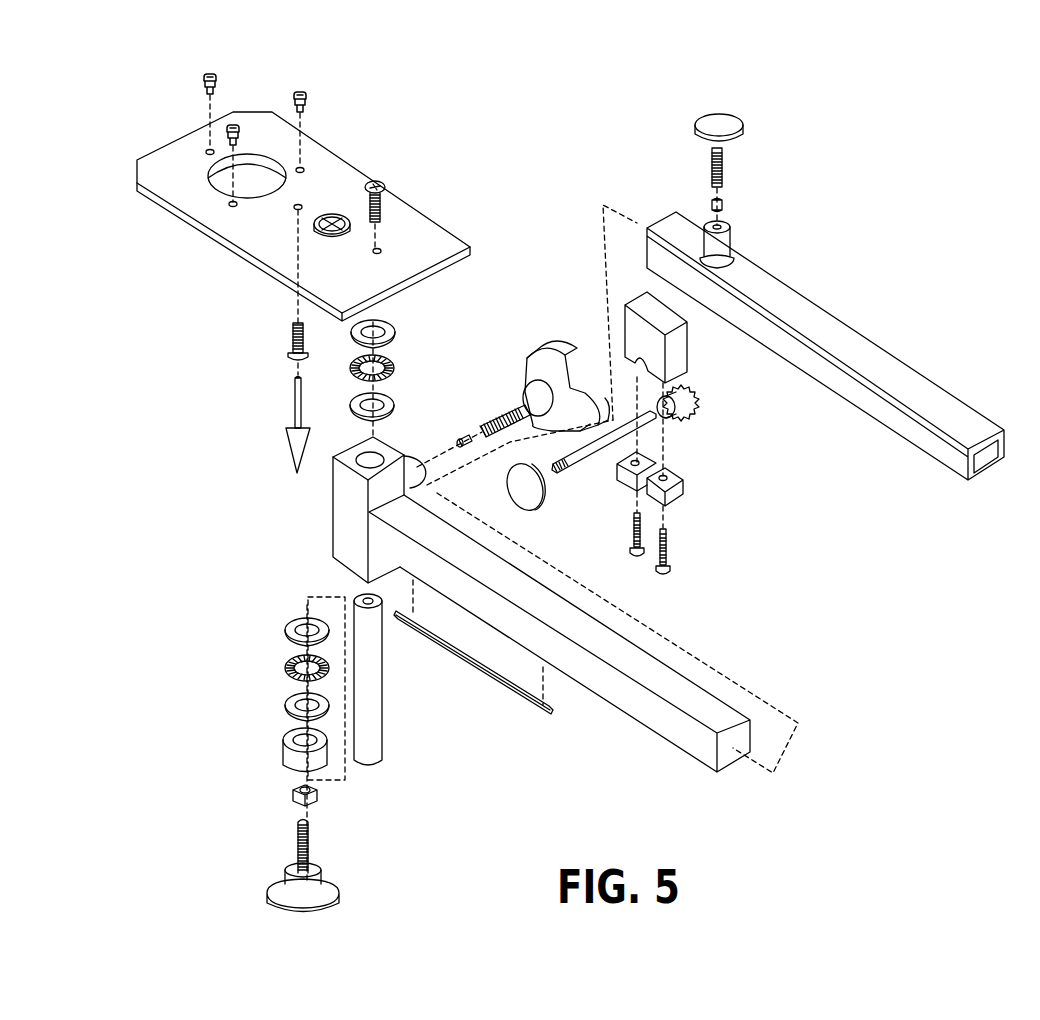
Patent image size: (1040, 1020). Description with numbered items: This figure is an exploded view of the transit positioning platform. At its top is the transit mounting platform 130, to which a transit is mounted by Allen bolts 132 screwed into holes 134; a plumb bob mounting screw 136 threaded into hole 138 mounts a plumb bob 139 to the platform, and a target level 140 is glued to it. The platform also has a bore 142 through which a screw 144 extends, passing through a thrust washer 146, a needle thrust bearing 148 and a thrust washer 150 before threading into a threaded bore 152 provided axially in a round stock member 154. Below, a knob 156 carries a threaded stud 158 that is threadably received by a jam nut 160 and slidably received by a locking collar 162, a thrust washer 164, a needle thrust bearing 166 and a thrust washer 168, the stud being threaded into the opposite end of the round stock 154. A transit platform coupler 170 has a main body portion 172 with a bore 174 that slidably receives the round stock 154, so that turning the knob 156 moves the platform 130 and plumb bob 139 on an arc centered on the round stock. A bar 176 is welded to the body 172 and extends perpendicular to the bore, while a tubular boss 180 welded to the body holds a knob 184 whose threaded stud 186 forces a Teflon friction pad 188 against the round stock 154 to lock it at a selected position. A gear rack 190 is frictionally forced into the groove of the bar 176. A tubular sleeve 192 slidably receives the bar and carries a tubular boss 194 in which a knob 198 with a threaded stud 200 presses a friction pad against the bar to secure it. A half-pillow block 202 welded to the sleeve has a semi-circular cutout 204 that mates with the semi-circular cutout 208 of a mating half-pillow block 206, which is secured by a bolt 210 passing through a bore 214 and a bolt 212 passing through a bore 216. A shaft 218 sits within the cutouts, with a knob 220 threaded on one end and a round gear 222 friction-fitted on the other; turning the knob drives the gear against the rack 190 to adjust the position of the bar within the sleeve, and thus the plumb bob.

The transit mounting platform 130 is at (165, 182).
The Allen bolts 132 is at (239, 80).
The holes 134 is at (206, 150).
The plumb bob mounting screw 136 is at (292, 343).
The hole 138 is at (302, 206).
The plumb bob 139 is at (290, 447).
The target level 140 is at (317, 236).
The bore 142 is at (381, 250).
The screw 144 is at (386, 187).
The thrust washer 146 is at (392, 327).
The needle thrust bearing 148 is at (398, 363).
The thrust washer 150 is at (400, 400).
The threaded bore 152 is at (340, 587).
The round stock member 154 is at (372, 698).
The knob 156 is at (333, 882).
The threaded stud 158 is at (297, 833).
The jam nut 160 is at (293, 793).
The locking collar 162 is at (285, 753).
The thrust washer 164 is at (285, 705).
The needle thrust bearing 166 is at (285, 670).
The thrust washer 168 is at (288, 630).
The transit platform coupler 170 is at (650, 650).
The main body portion 172 is at (347, 520).
The bore 174 is at (375, 453).
The bar 176 is at (520, 587).
The tubular boss 180 is at (415, 478).
The knob 184 is at (557, 357).
The threaded stud 186 is at (508, 410).
The Teflon friction pad 188 is at (465, 437).
The gear rack 190 is at (517, 705).
The tubular sleeve 192 is at (863, 350).
The tubular boss 194 is at (728, 240).
The knob 198 is at (732, 123).
The threaded stud 200 is at (723, 173).
The half-pillow block 202 is at (678, 357).
The semi-circular cutout 204 is at (638, 373).
The mating half-pillow block 206 is at (682, 487).
The semi-circular cutout 208 is at (637, 488).
The bolt 210 is at (633, 530).
The bolt 212 is at (670, 553).
The bore 214 is at (647, 452).
The bore 216 is at (672, 471).
The shaft 218 is at (588, 452).
The knob 220 is at (540, 503).
The round gear 222 is at (695, 407).